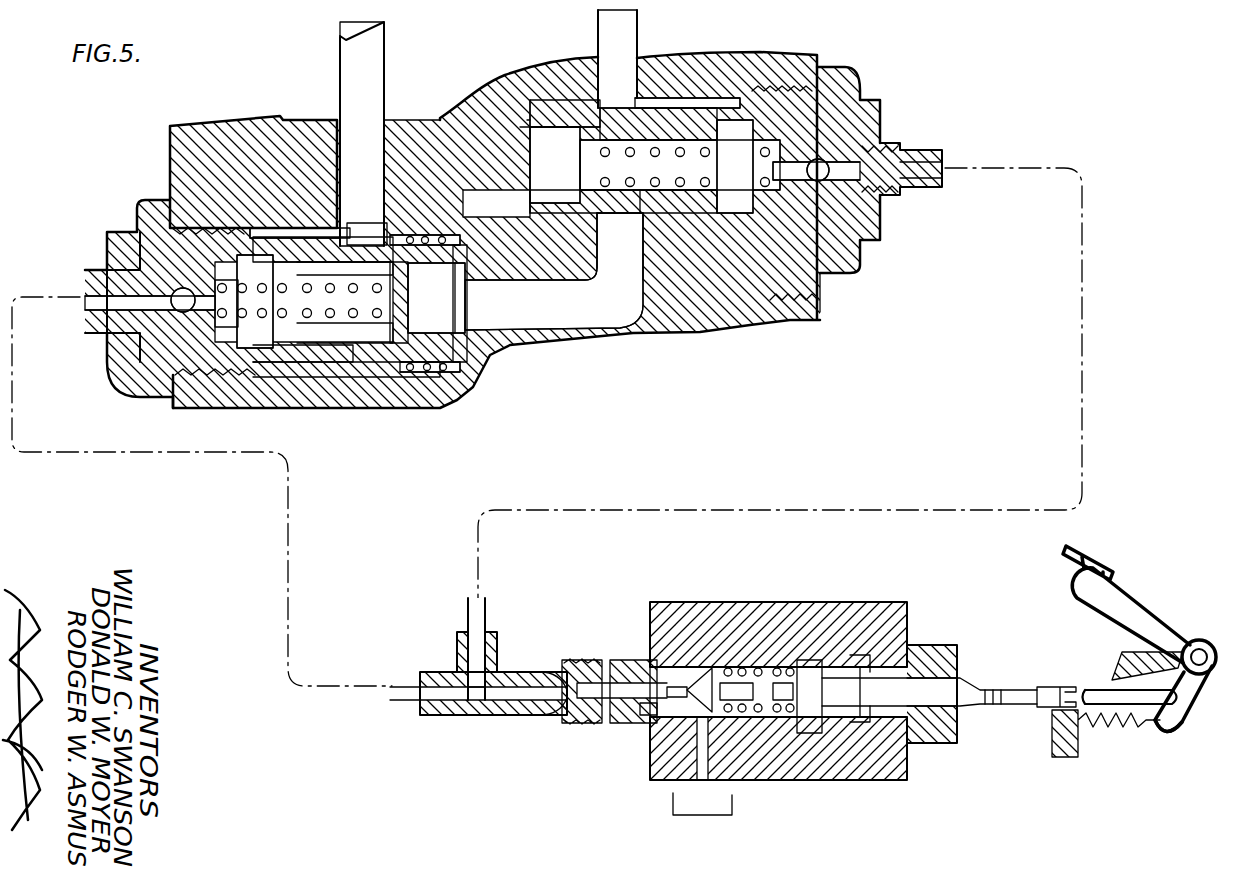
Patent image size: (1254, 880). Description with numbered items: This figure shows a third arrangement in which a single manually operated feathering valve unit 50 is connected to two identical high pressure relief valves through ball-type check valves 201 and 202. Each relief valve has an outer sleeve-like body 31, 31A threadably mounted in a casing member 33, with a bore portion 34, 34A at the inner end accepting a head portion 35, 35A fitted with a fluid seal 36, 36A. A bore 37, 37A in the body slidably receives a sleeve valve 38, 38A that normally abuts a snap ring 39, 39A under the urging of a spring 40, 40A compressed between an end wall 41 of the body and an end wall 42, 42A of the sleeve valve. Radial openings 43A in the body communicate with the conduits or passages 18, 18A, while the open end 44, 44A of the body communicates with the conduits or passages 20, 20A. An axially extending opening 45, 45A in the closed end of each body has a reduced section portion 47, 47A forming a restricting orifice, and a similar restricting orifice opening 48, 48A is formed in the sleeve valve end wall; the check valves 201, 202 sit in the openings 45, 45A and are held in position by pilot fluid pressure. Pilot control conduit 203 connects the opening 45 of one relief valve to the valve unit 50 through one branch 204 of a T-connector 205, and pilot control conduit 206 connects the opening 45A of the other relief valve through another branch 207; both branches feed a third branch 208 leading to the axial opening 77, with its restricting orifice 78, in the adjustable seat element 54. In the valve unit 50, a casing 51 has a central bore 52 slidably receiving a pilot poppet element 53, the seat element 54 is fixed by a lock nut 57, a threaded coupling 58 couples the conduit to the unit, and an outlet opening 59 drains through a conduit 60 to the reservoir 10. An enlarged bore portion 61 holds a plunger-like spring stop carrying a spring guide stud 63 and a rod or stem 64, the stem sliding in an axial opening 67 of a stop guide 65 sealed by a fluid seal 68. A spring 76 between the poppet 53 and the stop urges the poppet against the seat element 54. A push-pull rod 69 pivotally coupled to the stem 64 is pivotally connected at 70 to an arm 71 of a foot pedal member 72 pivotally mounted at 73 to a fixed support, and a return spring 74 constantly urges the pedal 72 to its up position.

The reservoir 10 is at (700, 818).
The conduit or passage 18 is at (384, 110).
The conduit or passage 18A is at (630, 55).
The conduit or passage 20 is at (545, 316).
The conduit or passage 20A is at (478, 95).
The outer sleeve-like body 31 is at (135, 215).
The outer sleeve-like body 31A is at (880, 75).
The casing member 33 is at (172, 160).
The bore portion 34 is at (428, 235).
The bore portion 34A is at (548, 100).
The head portion 35 is at (427, 373).
The head portion 35A is at (533, 90).
The fluid seal 36 is at (447, 373).
The fluid seal 36A is at (545, 322).
The bore 37 is at (290, 335).
The bore 37A is at (707, 200).
The sleeve valve 38 is at (327, 335).
The sleeve valve 38A is at (623, 197).
The snap ring 39 is at (420, 288).
The snap ring 39A is at (555, 200).
The spring 40 is at (332, 253).
The spring 40A is at (757, 118).
The end wall 41 is at (222, 350).
The end wall 42 is at (420, 317).
The end wall 42A is at (595, 152).
The radial openings 43A is at (576, 112).
The open end 44 is at (490, 357).
The open end 44A is at (540, 126).
The axially extending opening 45 is at (110, 302).
The axially extending opening 45A is at (933, 143).
The reduced section portion 47 is at (210, 290).
The reduced section portion 47A is at (787, 162).
The restricting orifice opening 48 is at (440, 242).
The restricting orifice opening 48A is at (600, 175).
The valve unit 50 is at (798, 588).
The outer casing or body member 51 is at (877, 617).
The central bore 52 is at (707, 668).
The pilot poppet element 53 is at (747, 747).
The adjustable seat element 54 is at (643, 705).
The lock nut 57 is at (633, 660).
The threaded coupling 58 is at (577, 660).
The outlet opening 59 is at (672, 700).
The conduit 60 is at (697, 790).
The enlarged bore portion 61 is at (830, 663).
The spring guide pin or stud 63 is at (803, 733).
The rod or stem 64 is at (917, 687).
The stop guide 65 is at (917, 740).
The axial opening 67 is at (883, 730).
The fluid seal 68 is at (960, 673).
The push-pull rod 69 is at (1100, 690).
The pivotal connection 70 is at (1187, 712).
The arm 71 is at (1185, 677).
The foot pedal member 72 is at (1145, 620).
The pivotal mounting 73 is at (1197, 640).
The return spring 74 is at (1108, 723).
The spring 76 is at (783, 740).
The axial opening 77 is at (593, 700).
The reduced section portion 78 is at (700, 668).
The check valve 201 is at (117, 305).
The check valve 202 is at (883, 227).
The pilot control conduit 203 is at (292, 625).
The branch 204 is at (437, 693).
The T-connector 205 is at (493, 717).
The pilot control conduit 206 is at (1085, 445).
The branch 207 is at (473, 648).
The third branch 208 is at (523, 690).